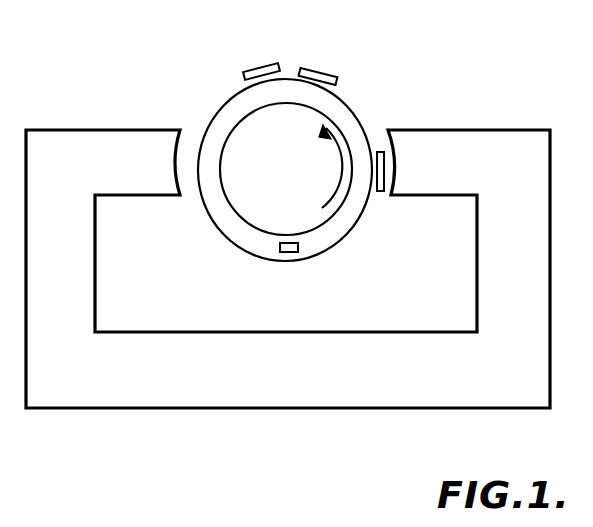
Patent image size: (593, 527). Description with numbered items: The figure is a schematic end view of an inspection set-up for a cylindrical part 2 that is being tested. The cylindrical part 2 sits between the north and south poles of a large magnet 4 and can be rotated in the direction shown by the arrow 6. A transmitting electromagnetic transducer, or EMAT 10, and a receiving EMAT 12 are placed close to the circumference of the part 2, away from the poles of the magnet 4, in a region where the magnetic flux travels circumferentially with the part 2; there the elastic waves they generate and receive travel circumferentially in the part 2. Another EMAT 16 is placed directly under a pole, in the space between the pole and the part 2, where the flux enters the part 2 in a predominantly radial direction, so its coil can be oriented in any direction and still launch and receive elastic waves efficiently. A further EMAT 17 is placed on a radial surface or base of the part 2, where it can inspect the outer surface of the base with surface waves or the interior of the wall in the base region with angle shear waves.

The cylindrical part 2 is at (240, 248).
The magnet 4 is at (508, 129).
The arrow 6 is at (340, 167).
The transmitting electromagnetic transducer (EMAT) 10 is at (252, 68).
The receiving EMAT 12 is at (322, 70).
The EMAT 16 is at (380, 194).
The EMAT 17 is at (298, 247).